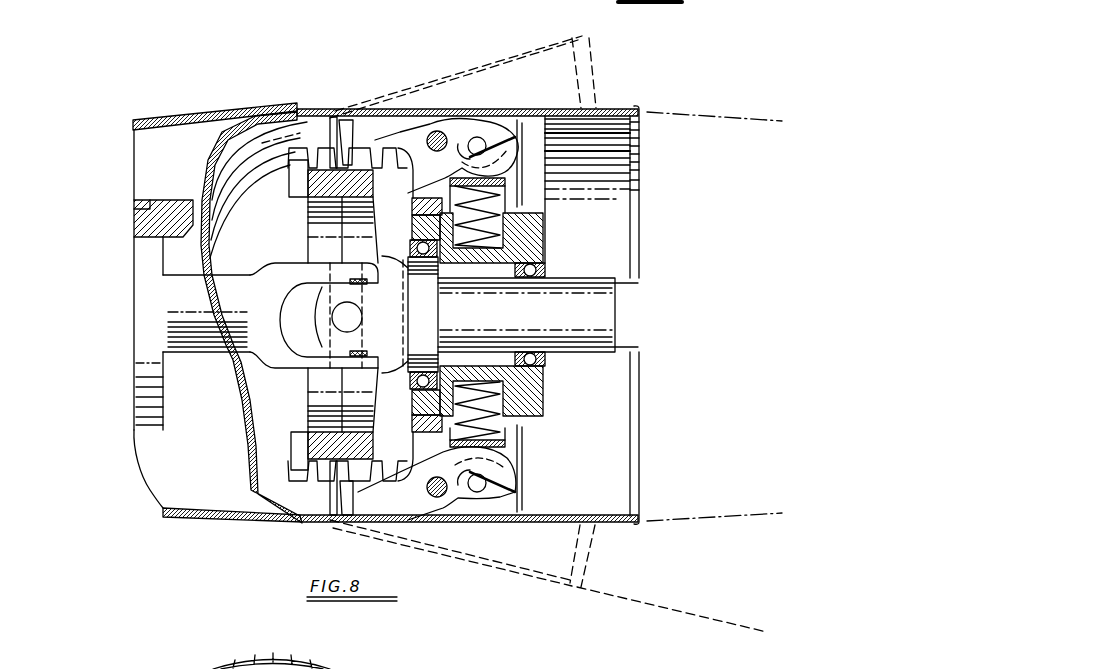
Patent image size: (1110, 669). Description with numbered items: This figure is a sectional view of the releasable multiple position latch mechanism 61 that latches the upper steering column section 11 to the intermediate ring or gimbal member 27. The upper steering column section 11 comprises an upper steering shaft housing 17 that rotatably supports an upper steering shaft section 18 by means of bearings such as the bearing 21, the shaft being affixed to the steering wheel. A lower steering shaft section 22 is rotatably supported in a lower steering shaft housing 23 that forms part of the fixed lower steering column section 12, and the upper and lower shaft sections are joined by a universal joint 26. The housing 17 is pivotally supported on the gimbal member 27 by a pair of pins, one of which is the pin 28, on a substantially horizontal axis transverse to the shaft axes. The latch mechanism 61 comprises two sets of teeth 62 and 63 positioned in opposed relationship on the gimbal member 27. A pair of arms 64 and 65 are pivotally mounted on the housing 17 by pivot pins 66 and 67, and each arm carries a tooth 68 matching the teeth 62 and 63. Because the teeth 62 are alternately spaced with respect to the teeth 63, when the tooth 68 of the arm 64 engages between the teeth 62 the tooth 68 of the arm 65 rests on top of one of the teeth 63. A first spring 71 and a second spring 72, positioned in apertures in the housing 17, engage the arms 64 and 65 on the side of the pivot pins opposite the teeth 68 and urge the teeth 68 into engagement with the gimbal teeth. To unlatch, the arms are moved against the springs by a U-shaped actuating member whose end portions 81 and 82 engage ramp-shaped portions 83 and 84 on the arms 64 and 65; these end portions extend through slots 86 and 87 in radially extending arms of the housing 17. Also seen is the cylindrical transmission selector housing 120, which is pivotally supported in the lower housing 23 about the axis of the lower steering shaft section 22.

The upper steering column section 11 is at (526, 100).
The lower steering column section 12 is at (221, 535).
The upper steering shaft housing 17 is at (533, 148).
The upper steering shaft section 18 is at (633, 313).
The bearing 21 is at (545, 264).
The lower steering shaft section 22 is at (203, 340).
The lower steering shaft housing 23 is at (157, 410).
The universal joint 26 is at (302, 357).
The intermediate ring or gimbal member 27 is at (307, 190).
The pin 28 is at (405, 400).
The releasable multiple position latch mechanism 61 is at (405, 128).
The teeth 62 is at (332, 117).
The teeth 63 is at (320, 475).
The arm 64 is at (465, 123).
The arm 65 is at (455, 503).
The pivot pin 66 is at (365, 314).
The pivot pin 67 is at (437, 497).
The tooth 68 is at (350, 163).
The first spring 71 is at (525, 225).
The second spring 72 is at (510, 420).
The end portion 81 is at (480, 149).
The end portion 82 is at (477, 492).
The ramp-shaped portion 83 is at (557, 103).
The ramp-shaped portion 84 is at (518, 494).
The slot 86 is at (497, 140).
The slot 87 is at (493, 490).
The transmission selector housing 120 is at (170, 516).